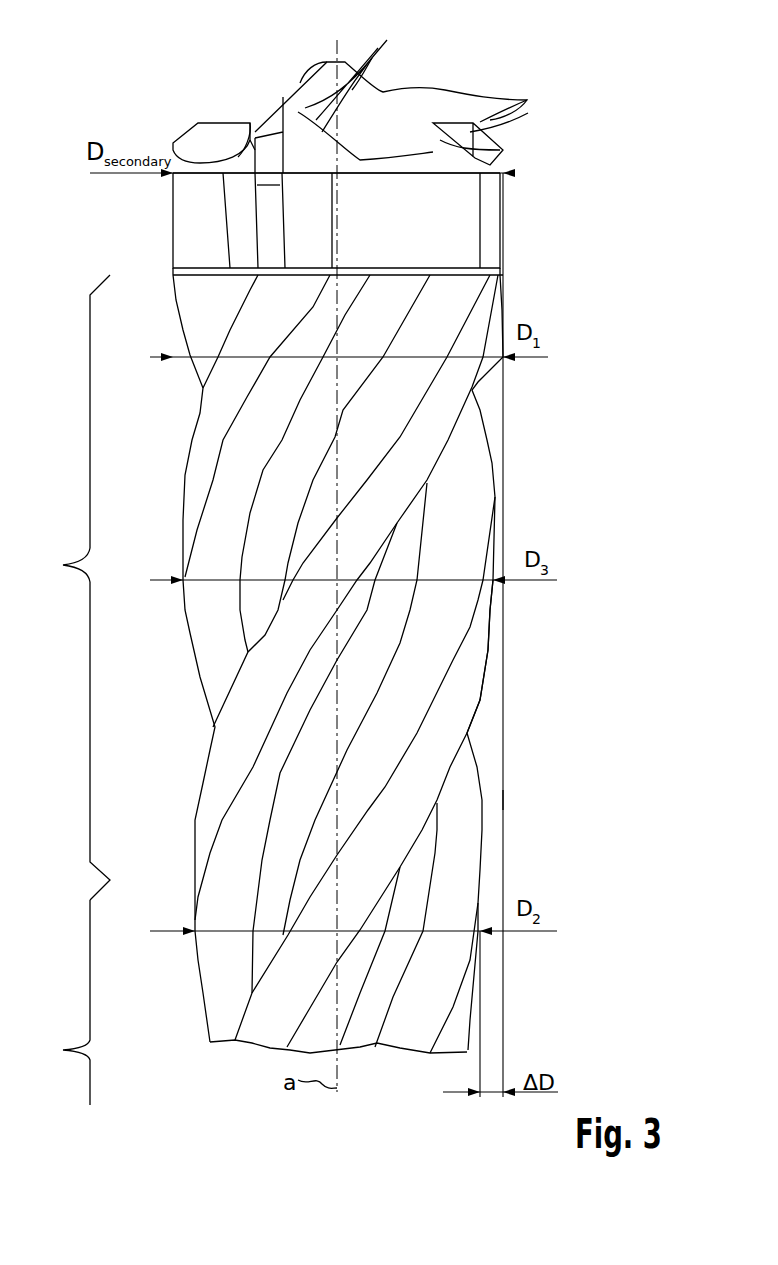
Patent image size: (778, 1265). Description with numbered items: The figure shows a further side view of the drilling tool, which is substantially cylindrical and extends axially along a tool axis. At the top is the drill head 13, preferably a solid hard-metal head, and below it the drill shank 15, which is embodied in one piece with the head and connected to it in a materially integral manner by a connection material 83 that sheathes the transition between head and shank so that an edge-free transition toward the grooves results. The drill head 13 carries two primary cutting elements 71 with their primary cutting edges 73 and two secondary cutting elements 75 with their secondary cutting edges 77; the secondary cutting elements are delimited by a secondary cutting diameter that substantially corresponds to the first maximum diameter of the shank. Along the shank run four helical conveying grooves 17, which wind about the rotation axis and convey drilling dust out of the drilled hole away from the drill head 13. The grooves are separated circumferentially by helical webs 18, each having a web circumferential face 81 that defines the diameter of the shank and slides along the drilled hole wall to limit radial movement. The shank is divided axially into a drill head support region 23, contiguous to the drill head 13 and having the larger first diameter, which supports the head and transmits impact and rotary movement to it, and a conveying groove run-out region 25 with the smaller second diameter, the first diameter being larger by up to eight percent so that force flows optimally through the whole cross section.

The drill head 13 is at (125, 103).
The drill shank 15 is at (532, 795).
The conveying grooves 17 is at (450, 520).
The webs 18 is at (450, 710).
The drill head support region 23 is at (69, 587).
The conveying groove run-out region 25 is at (59, 1002).
The primary cutting elements 71 is at (383, 92).
The primary cutting edges 73 is at (392, 32).
The secondary cutting elements 75 is at (230, 137).
The secondary cutting edges 77 is at (207, 117).
The web circumferential face 81 is at (483, 313).
The connection material 83 is at (312, 197).